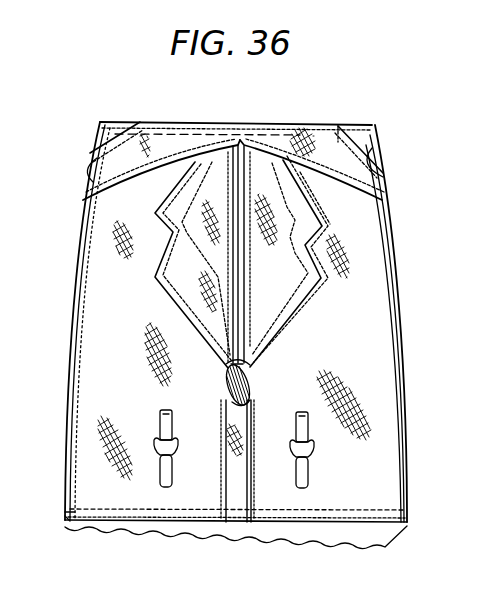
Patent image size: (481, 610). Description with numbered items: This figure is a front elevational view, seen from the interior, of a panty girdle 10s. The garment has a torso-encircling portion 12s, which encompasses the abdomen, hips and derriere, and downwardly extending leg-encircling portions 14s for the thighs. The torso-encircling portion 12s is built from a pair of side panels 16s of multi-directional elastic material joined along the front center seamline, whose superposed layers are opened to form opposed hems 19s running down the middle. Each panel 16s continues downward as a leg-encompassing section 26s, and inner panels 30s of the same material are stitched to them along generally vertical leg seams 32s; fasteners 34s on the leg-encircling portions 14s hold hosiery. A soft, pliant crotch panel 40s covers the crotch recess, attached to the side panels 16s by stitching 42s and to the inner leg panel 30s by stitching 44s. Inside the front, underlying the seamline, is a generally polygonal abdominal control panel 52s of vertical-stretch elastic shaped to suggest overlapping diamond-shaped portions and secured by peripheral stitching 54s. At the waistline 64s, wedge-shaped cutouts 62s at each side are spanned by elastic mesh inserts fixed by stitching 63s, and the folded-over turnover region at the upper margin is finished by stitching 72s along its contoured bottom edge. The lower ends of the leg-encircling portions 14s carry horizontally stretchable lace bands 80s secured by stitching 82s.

The panty girdle 10s is at (103, 117).
The torso-encircling portion 12s is at (64, 332).
The leg-encircling portions 14s is at (60, 486).
The panels 16s is at (214, 389).
The hem 19s is at (247, 346).
The leg-encompassing section 26s is at (116, 503).
The inner panels 30s is at (237, 500).
The leg seams 32s is at (219, 507).
The fasteners 34s is at (156, 440).
The crotch panel 40s is at (226, 380).
The stitching 42s is at (253, 370).
The stitching 44s is at (245, 404).
The abdominal control panel 52s is at (306, 284).
The stitching 54s is at (303, 253).
The wedge-shaped cutouts 62s is at (115, 130).
The stitching 63s is at (96, 166).
The waistline 64s is at (201, 121).
The stitching 72s is at (127, 169).
The lace bands 80s is at (107, 528).
The stitching 82s is at (65, 519).